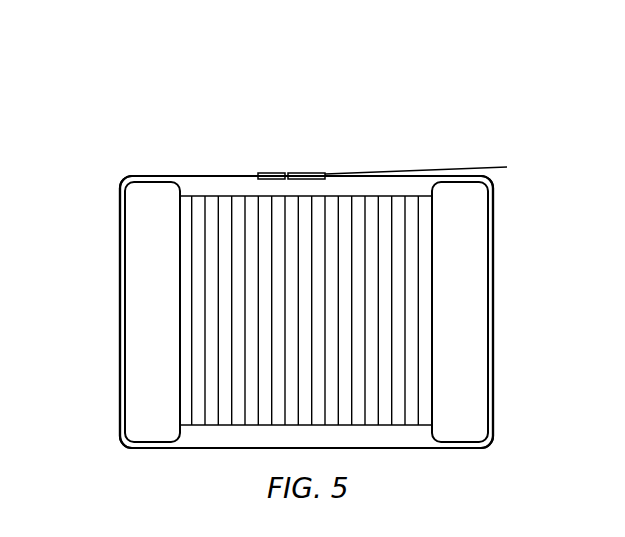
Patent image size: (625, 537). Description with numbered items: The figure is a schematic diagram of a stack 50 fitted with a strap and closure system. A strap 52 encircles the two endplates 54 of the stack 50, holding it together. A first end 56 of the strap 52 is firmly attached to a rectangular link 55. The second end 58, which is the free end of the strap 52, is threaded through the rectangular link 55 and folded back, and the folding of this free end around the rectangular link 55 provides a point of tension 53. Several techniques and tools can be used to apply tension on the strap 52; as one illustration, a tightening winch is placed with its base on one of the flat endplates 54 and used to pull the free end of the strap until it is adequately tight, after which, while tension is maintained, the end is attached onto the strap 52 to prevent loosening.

The stack 50 is at (238, 100).
The strap 52 is at (120, 254).
The point of tension 53 is at (325, 175).
The endplates 54 is at (138, 338).
The rectangular link 55 is at (305, 173).
The first end of the strap 56 is at (223, 175).
The second end of the strap 58 is at (455, 167).